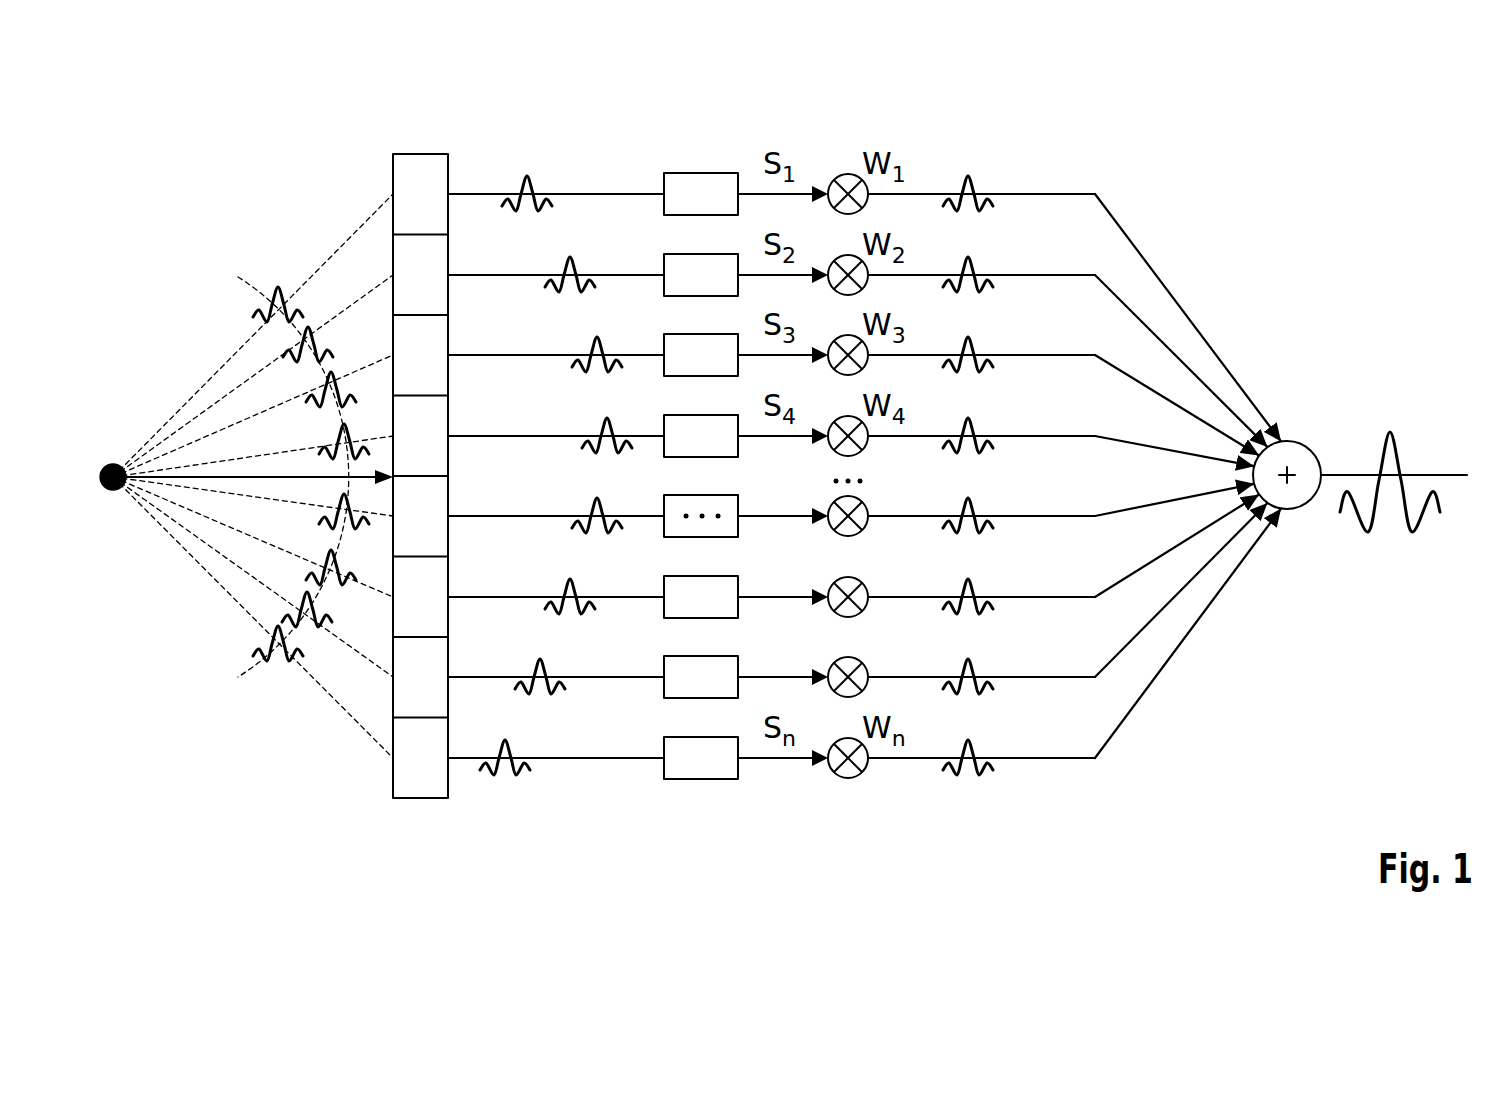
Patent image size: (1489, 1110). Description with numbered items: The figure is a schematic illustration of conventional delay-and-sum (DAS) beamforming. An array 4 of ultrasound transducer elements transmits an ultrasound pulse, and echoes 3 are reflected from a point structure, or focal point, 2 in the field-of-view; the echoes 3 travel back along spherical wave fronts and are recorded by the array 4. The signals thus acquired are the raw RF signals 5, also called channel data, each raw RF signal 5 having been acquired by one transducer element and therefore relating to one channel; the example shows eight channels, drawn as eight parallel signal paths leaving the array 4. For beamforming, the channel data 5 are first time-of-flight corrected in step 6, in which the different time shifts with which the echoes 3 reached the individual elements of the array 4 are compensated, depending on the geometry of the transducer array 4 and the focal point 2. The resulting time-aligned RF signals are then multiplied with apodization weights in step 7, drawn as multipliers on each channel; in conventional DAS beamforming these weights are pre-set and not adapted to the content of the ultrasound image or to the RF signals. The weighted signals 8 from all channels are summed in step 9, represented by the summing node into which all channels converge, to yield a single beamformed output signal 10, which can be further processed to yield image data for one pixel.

The point structure (focal point) 2 is at (113, 464).
The echoes 3 is at (255, 287).
The array of transducer elements 4 is at (423, 153).
The raw RF signals (channel data) 5 is at (527, 150).
The time-of-flight correction step 6 is at (703, 150).
The apodization weighting step 7 is at (851, 120).
The weighted signals 8 is at (970, 150).
The summation step 9 is at (1293, 414).
The beamformed output signal 10 is at (1391, 414).